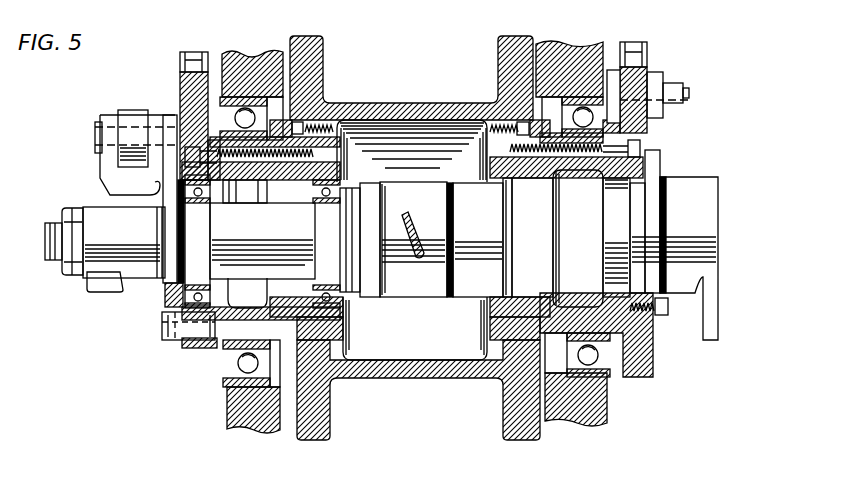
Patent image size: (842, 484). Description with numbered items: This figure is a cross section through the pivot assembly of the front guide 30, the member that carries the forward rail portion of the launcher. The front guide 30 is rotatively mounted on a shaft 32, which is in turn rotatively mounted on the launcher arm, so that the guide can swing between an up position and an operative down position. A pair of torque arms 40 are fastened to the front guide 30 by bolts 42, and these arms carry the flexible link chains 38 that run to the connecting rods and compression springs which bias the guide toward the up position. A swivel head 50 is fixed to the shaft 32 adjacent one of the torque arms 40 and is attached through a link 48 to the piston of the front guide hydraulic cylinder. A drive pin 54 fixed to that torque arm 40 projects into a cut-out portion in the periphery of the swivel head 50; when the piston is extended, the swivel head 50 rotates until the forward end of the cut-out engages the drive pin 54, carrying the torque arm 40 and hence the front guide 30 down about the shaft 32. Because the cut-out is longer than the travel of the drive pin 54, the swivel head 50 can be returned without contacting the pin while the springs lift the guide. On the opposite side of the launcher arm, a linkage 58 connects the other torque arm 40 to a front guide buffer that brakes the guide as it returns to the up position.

The front guide 30 is at (330, 67).
The shaft 32 is at (486, 229).
The flexible link chains 38 is at (202, 52).
The torque arms 40 is at (182, 95).
The bolts 42 is at (227, 183).
The link 48 is at (127, 110).
The swivel head 50 is at (168, 229).
The drive pin 54 is at (173, 338).
The linkage 58 is at (650, 80).